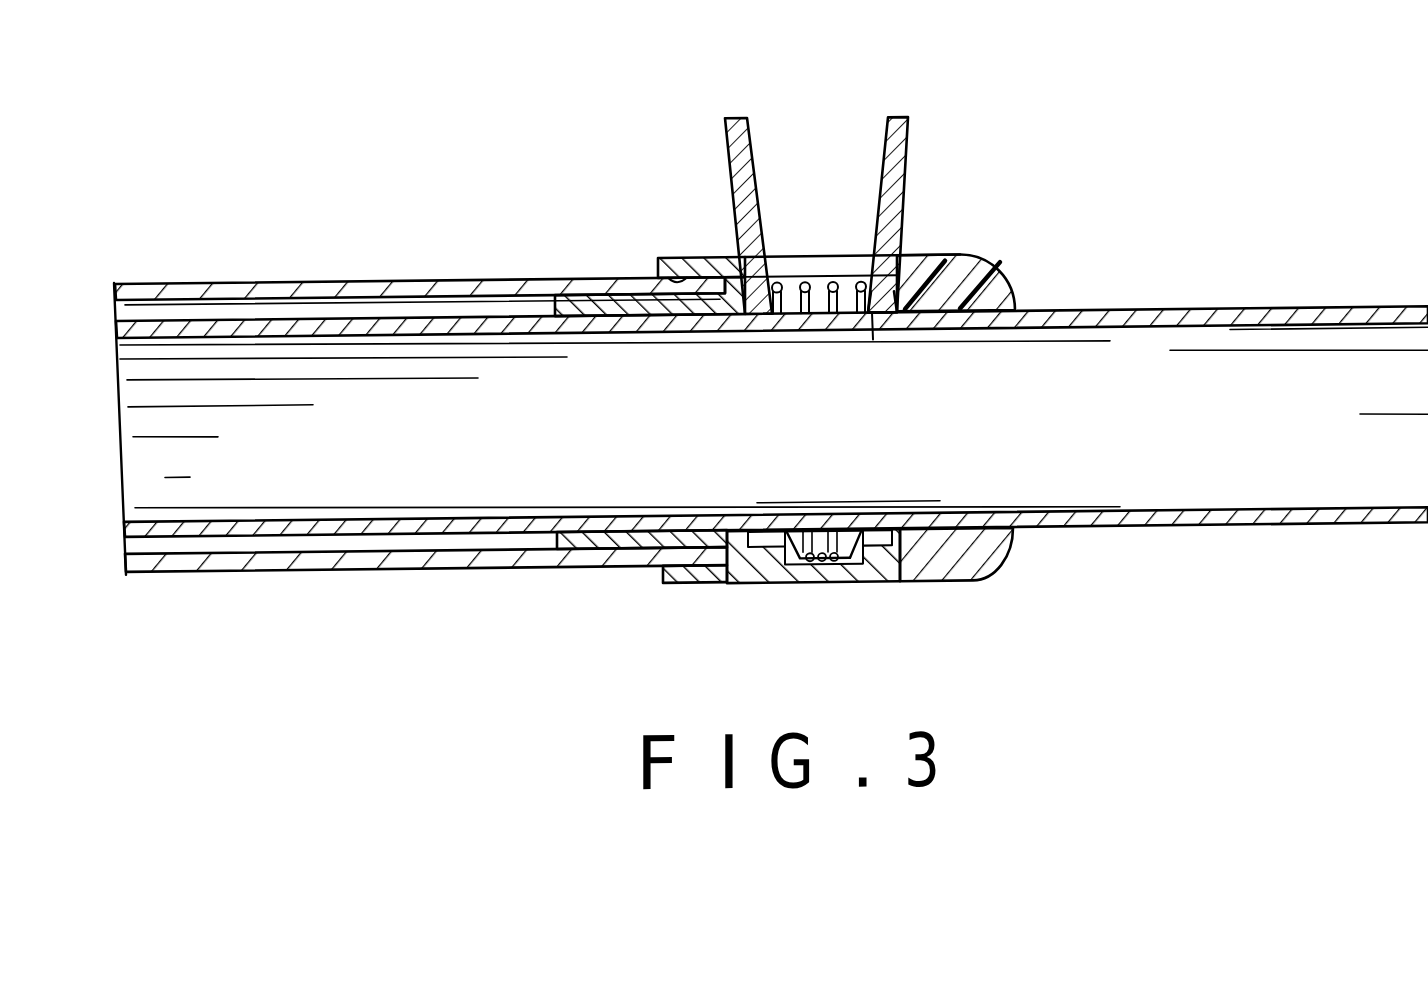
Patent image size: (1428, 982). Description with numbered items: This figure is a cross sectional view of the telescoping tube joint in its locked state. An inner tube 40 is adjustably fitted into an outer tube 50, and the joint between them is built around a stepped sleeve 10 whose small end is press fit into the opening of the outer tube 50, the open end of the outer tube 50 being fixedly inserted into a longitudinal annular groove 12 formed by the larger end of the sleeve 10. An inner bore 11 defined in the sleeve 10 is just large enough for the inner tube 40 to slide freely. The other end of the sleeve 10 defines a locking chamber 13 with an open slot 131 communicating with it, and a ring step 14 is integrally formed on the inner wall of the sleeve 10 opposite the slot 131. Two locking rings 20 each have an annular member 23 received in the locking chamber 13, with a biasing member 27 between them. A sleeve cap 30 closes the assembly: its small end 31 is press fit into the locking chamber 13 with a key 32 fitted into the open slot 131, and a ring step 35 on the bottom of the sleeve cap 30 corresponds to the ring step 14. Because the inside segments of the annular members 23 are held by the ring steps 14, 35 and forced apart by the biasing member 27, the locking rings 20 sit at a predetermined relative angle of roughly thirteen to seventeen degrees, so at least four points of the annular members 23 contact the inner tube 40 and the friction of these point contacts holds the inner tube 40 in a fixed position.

The sleeve 10 is at (740, 580).
The inner bore 11 is at (660, 530).
The longitudinal annular groove 12 is at (670, 286).
The locking chamber 13 is at (838, 563).
The ring step 14 is at (777, 561).
The locking ring 20 is at (755, 132).
The annular member 23 is at (872, 321).
The biasing member 27 is at (795, 288).
The sleeve cap 30 is at (968, 268).
The small end 31 is at (948, 565).
The key 32 is at (913, 276).
The ring step 35 is at (878, 566).
The inner tube 40 is at (1085, 328).
The outer tube 50 is at (512, 287).
The open slot 131 is at (888, 259).